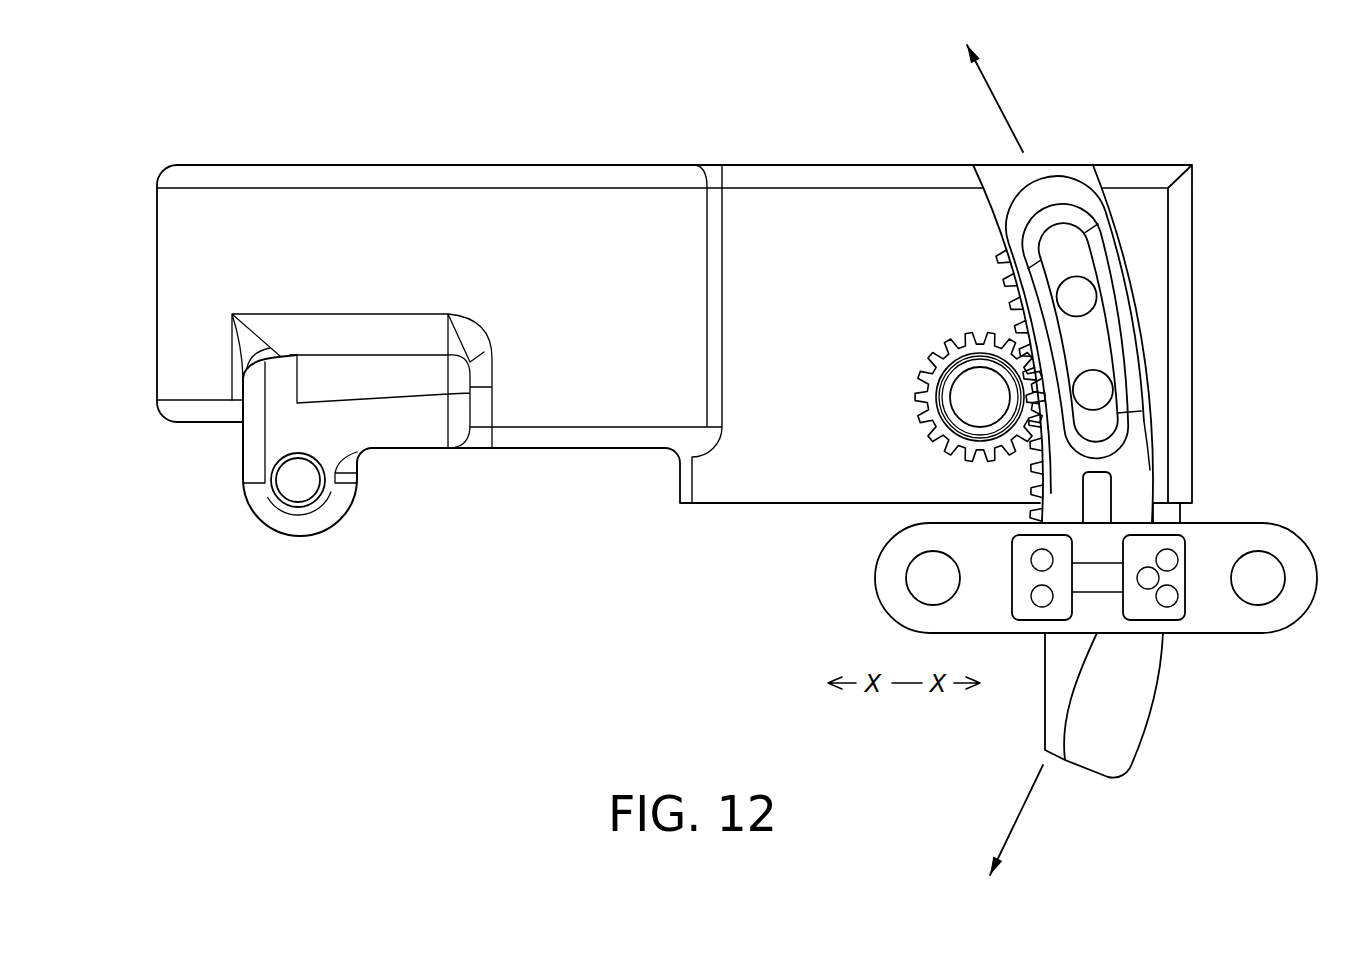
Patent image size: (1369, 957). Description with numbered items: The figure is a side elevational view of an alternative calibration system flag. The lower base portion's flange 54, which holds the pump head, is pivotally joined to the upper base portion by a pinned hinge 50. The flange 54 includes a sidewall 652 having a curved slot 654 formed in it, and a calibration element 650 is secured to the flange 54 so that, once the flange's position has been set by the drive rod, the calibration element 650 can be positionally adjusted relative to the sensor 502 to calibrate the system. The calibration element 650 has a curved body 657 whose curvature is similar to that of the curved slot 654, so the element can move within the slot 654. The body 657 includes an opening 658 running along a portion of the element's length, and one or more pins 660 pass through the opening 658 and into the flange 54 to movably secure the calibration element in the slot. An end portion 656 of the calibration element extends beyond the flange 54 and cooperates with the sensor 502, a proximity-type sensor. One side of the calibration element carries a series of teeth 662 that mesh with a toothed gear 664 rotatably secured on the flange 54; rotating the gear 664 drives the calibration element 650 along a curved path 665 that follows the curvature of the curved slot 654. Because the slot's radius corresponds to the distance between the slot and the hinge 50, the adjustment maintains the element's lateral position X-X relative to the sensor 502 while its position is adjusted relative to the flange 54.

The hinge 50 is at (283, 500).
The flange 54 is at (762, 238).
The sensor 502 is at (1168, 622).
The calibration element 650 is at (1077, 180).
The sidewall 652 is at (790, 477).
The curved slot 654 is at (1003, 178).
The end portion 656 is at (1100, 497).
The curved body 657 is at (1143, 413).
The opening 658 is at (1092, 350).
The pins 660 is at (1097, 296).
The teeth 662 is at (1010, 255).
The toothed gear 664 is at (926, 364).
The curved path 665 is at (993, 84).